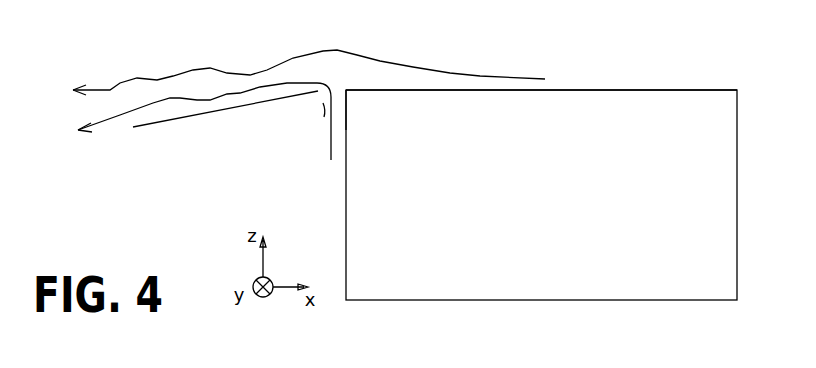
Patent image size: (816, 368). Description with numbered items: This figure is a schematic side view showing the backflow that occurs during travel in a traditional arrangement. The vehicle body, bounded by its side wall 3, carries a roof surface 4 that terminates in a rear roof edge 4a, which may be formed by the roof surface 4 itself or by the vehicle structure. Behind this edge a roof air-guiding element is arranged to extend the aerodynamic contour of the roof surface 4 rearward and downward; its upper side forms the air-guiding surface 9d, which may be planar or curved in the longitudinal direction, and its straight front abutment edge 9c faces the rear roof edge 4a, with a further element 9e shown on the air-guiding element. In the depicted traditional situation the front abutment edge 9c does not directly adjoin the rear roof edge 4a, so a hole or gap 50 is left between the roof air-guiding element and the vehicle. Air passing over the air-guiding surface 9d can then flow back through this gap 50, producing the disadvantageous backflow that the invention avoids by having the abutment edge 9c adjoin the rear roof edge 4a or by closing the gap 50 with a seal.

The side wall 3 is at (525, 260).
The roof surface 4 is at (570, 90).
The rear roof edge 4a is at (346, 90).
The front abutment edge 9c is at (319, 116).
The air-guiding surface 9d is at (208, 113).
The lower airflow 9e is at (178, 118).
The gap 50 is at (323, 103).